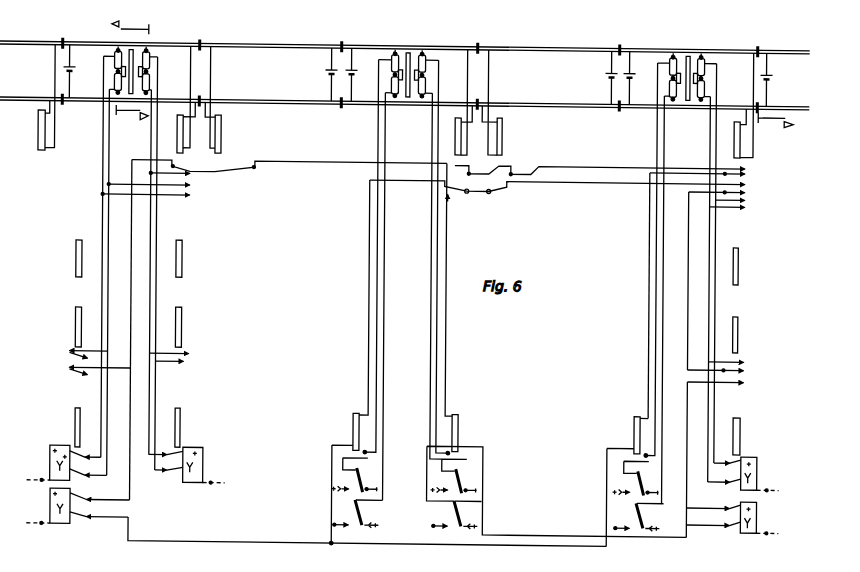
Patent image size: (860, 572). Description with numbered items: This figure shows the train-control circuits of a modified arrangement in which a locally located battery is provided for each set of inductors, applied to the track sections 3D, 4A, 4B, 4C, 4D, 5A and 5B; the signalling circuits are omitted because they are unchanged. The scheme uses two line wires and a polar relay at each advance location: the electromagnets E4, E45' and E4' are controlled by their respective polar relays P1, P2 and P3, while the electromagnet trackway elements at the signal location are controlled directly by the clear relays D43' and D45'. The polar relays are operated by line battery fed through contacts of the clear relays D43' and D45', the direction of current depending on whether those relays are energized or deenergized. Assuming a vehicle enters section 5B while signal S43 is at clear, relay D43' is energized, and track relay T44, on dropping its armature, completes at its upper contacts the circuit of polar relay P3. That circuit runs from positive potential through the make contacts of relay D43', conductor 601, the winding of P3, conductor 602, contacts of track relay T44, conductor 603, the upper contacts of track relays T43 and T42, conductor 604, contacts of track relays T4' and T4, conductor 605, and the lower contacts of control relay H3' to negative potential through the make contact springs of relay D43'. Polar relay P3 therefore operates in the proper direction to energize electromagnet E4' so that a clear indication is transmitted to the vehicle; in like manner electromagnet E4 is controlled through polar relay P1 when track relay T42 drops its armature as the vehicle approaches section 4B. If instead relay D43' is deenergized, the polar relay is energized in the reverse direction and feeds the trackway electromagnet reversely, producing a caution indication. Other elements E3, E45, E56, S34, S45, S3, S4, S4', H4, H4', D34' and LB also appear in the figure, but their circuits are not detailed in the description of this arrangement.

The track section 3D is at (34, 97).
The track section 4A is at (81, 71).
The track section 4B is at (264, 77).
The track section 4C is at (351, 75).
The track section 4D is at (542, 80).
The track section 5A is at (629, 78).
The track section 5B is at (780, 79).
The electromagnet E3 is at (118, 47).
The electromagnet E45 is at (162, 61).
The electromagnet E4 is at (390, 65).
The electromagnet E45' is at (436, 65).
The electromagnet E4' is at (668, 69).
The electromagnet E56 is at (702, 47).
The signal S43 is at (130, 21).
The switch S34 is at (130, 120).
The switch S45 is at (785, 118).
The track relay T4 is at (177, 99).
The track relay T4' is at (226, 100).
The track relay T42 is at (456, 126).
The track relay T43 is at (503, 130).
The track relay T44 is at (741, 141).
The conductor 604 is at (309, 161).
The conductor 603 is at (588, 160).
The conductor 605 is at (133, 297).
The conductor 602 is at (651, 318).
The conductor 601 is at (278, 540).
The signal relay S4 is at (64, 258).
The signal relay S3 is at (189, 258).
The control relay H3' is at (62, 327).
The relay H4 is at (190, 327).
The signal relay S4' is at (749, 266).
The relay H4' is at (750, 335).
The clear relay D43' is at (67, 444).
The directional relay D34' is at (187, 446).
The clear relay D45' is at (732, 476).
The relay LB is at (77, 507).
The polar relay P1 is at (356, 301).
The polar relay P2 is at (557, 298).
The polar relay P3 is at (635, 304).